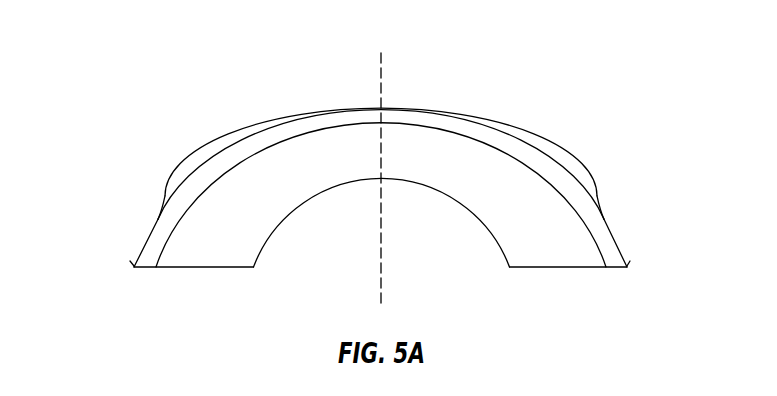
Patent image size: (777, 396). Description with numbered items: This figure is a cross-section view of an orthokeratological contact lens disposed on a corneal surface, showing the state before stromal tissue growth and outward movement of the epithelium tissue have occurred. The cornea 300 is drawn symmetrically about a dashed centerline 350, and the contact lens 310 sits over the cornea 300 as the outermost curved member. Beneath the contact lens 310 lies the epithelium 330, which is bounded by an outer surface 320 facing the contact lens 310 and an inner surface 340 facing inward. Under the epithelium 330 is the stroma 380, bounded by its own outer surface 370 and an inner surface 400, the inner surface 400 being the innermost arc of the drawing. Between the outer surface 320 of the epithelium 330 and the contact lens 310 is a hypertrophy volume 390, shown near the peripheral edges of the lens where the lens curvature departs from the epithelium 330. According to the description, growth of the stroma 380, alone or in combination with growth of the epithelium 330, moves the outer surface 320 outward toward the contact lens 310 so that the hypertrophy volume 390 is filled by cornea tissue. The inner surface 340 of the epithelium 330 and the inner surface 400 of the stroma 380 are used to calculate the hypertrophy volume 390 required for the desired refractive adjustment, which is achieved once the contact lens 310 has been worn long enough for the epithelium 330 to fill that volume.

The cornea 300 is at (361, 153).
The contact lens 310 is at (522, 131).
The outer surface 320 is at (544, 165).
The epithelium 330 is at (457, 128).
The inner surface 340 is at (582, 194).
The centerline 350 is at (381, 73).
The outer surface 370 is at (493, 147).
The stroma 380 is at (578, 242).
The hypertrophy volume 390 is at (187, 171).
The inner surface 400 is at (287, 212).